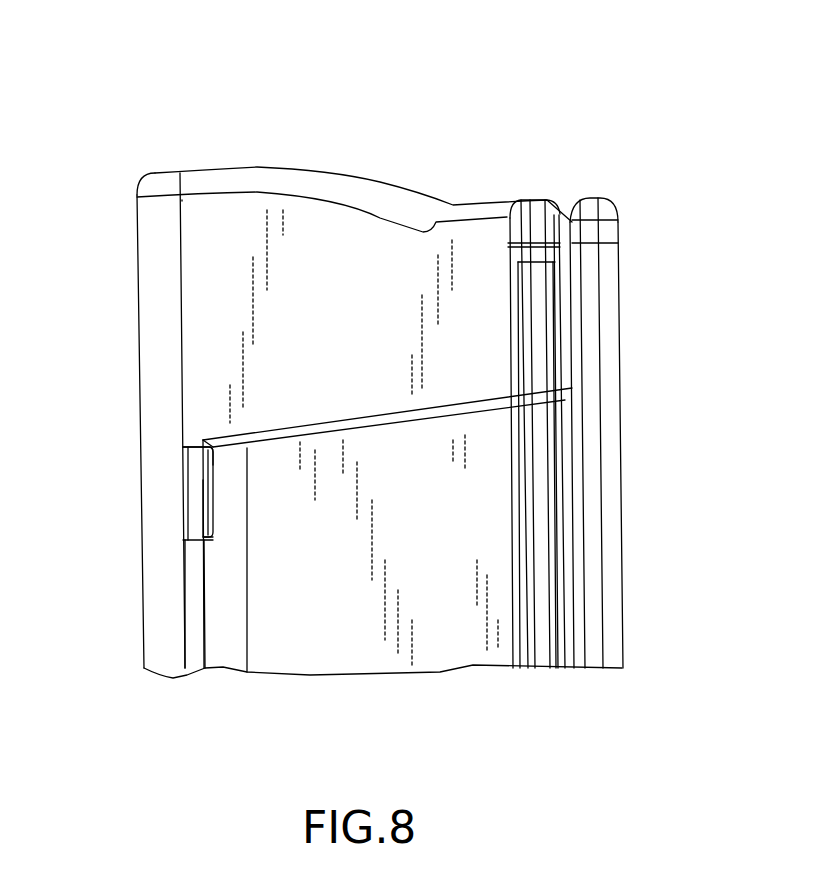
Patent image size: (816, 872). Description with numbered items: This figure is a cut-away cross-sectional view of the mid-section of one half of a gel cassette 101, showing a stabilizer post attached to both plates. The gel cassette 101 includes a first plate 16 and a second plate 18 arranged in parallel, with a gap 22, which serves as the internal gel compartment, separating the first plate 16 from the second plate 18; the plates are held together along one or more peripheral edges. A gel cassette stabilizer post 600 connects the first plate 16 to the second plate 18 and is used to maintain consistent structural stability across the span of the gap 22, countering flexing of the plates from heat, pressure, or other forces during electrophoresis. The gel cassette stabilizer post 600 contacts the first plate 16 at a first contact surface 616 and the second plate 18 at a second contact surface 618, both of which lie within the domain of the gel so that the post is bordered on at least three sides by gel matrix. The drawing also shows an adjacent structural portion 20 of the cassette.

The gel cassette 101 is at (352, 153).
The second plate 18 is at (210, 266).
The second side wall / corner post 20 is at (590, 350).
The first plate 16 is at (480, 492).
The gap 22 is at (193, 610).
The gel cassette stabilizer post 600 is at (193, 485).
The second contact surface 618 is at (185, 460).
The first contact surface 616 is at (203, 502).